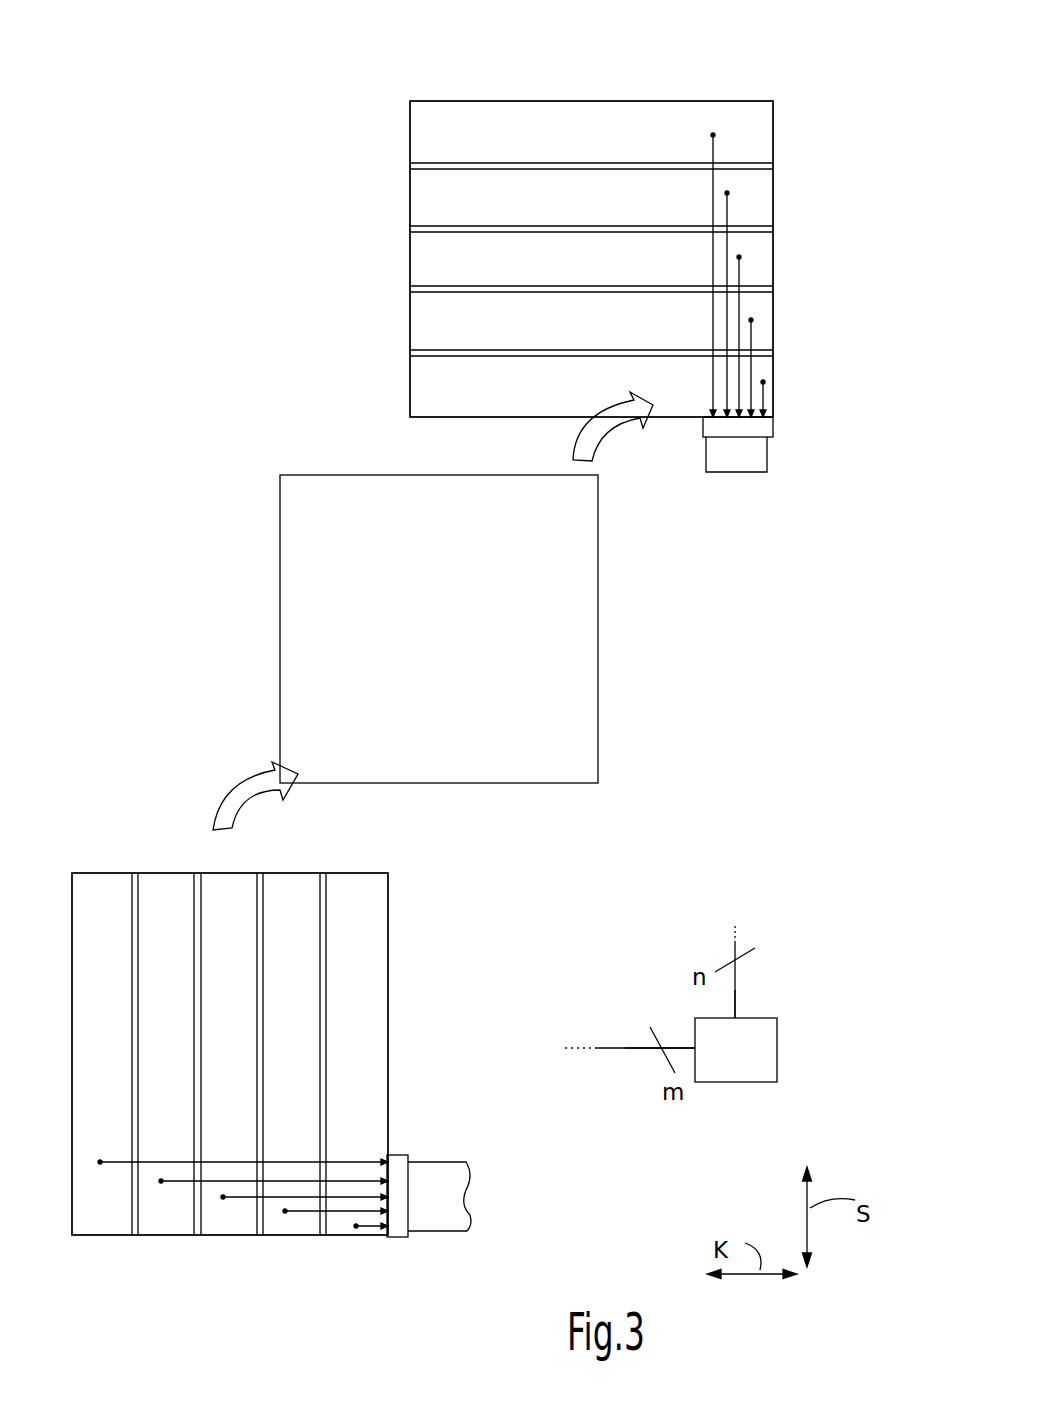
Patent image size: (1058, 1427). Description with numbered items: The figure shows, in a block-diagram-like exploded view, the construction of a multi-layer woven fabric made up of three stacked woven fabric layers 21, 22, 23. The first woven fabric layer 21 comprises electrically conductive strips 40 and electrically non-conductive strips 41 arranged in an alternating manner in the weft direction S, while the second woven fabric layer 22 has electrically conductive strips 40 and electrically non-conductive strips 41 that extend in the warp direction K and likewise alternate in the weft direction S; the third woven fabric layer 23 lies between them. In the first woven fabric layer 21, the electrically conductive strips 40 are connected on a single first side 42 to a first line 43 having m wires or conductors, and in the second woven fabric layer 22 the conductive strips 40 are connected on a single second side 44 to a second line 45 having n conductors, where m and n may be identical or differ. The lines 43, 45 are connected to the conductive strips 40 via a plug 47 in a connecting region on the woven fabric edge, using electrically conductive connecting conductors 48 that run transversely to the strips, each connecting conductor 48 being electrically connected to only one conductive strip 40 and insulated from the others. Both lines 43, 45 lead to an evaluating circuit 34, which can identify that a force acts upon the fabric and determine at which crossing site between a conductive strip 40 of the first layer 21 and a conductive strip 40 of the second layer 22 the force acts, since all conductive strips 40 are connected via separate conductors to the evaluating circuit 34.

The first woven fabric layer 21 is at (400, 1068).
The second woven fabric layer 22 is at (345, 183).
The woven fabric layer 23 is at (617, 632).
The evaluating circuit 34 is at (777, 1048).
The electrically conductive strip 40 is at (642, 195).
The electrically non-conductive strip 41 is at (410, 167).
The first side 42 is at (413, 1140).
The first line 43 is at (453, 1208).
The second side 44 is at (684, 439).
The second line 45 is at (737, 450).
The plug 47 is at (773, 425).
The connecting conductor 48 is at (715, 147).